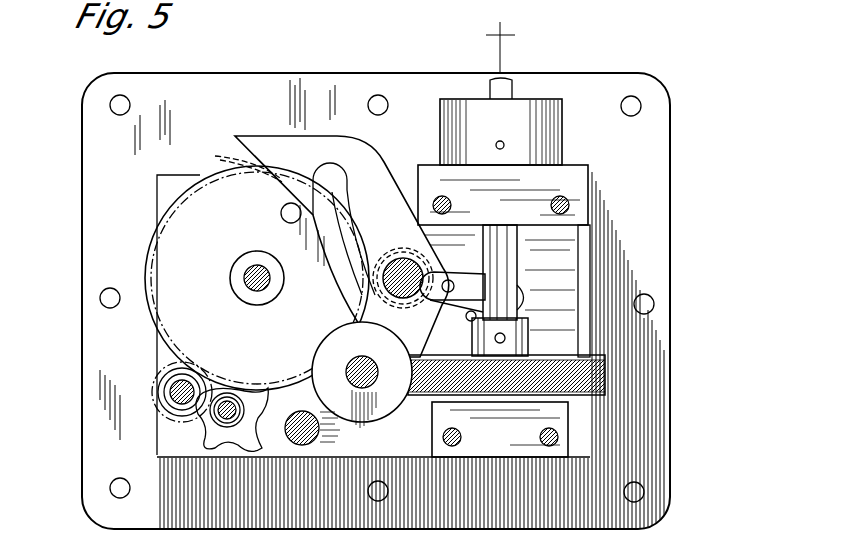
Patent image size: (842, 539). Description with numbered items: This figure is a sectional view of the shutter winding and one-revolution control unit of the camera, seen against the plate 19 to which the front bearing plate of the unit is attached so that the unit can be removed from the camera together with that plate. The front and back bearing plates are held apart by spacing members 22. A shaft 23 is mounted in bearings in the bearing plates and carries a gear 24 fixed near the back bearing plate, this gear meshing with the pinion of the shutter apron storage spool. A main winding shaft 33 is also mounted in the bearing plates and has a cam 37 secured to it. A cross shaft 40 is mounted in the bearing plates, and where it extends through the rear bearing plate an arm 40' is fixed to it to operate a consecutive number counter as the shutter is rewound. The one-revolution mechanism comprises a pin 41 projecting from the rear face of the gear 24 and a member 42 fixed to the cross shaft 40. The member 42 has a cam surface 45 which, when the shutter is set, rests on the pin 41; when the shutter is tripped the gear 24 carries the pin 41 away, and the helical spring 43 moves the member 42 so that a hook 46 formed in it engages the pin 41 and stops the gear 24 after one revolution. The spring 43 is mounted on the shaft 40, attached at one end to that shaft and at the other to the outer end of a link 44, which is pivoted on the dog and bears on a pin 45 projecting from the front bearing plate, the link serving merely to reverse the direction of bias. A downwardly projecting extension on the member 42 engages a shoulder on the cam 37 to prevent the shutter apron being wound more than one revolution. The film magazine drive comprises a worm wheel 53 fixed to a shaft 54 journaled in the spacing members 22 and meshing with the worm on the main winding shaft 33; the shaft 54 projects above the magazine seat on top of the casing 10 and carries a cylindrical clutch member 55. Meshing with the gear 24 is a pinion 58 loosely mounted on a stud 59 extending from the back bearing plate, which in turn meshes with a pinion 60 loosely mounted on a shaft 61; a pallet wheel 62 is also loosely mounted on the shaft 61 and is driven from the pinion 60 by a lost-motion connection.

The casing 10 is at (515, 35).
The plate 19 is at (655, 160).
The spacing members 22 is at (568, 175).
The shaft 23 is at (252, 292).
The gear 24 is at (160, 266).
The main winding shaft 33 is at (343, 385).
The cam 37 is at (372, 398).
The cross shaft 40 is at (375, 278).
The arm 40' is at (384, 9).
The pin 41 is at (283, 215).
The member 42 is at (342, 240).
The helical spring 43 is at (445, 333).
The link 44 is at (470, 286).
The cam surface 45 is at (468, 316).
The hook 46 is at (346, 242).
The worm wheel 53 is at (590, 378).
The shaft 54 is at (515, 292).
The cylindrical member 55 is at (560, 105).
The pinion 58 is at (153, 395).
The stud 59 is at (178, 395).
The pinion 60 is at (236, 405).
The shaft 61 is at (222, 414).
The pallet wheel 62 is at (212, 440).